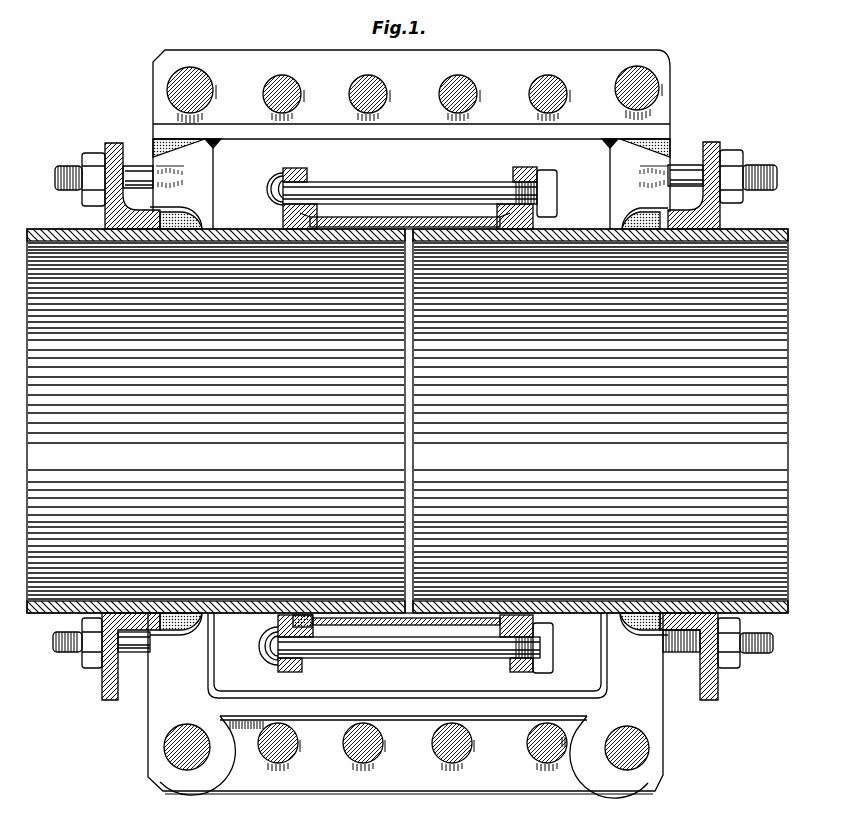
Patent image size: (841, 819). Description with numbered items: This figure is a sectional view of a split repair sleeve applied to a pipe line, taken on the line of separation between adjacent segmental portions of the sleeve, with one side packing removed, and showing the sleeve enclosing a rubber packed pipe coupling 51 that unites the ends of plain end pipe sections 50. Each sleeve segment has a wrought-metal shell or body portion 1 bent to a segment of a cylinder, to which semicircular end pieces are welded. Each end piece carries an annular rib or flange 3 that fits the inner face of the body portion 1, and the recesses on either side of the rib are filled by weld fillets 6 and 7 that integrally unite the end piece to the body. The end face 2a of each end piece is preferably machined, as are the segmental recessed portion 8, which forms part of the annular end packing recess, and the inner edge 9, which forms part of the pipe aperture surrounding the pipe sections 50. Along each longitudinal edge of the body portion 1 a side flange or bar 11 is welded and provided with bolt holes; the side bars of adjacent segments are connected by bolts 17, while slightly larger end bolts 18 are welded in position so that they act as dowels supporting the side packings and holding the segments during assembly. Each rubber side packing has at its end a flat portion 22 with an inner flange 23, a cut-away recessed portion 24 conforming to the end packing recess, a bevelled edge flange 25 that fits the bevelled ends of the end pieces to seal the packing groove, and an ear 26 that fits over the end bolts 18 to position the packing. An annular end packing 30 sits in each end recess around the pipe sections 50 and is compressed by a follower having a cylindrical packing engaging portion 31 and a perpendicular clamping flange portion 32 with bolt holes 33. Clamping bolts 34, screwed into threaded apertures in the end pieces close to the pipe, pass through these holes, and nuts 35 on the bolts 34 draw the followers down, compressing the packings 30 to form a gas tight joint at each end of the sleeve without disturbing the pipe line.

The shell or body portion 1 is at (470, 130).
The end faces of the end pieces 2a is at (200, 190).
The annular rib or flange 3 is at (203, 139).
The fillet 6 is at (216, 147).
The fillet 7 is at (152, 143).
The segmental recessed portion 8 is at (195, 212).
The inner edge of the end piece 9 is at (213, 220).
The side flange or bar 11 is at (563, 63).
The bolts 17 is at (348, 91).
The end bolts 18 is at (190, 68).
The flat portion 22 is at (406, 731).
The flange 23 is at (214, 680).
The cut-away recessed portion 24 is at (170, 640).
The edge flange 25 is at (190, 638).
The ear 26 is at (170, 772).
The end packing 30 is at (643, 632).
The cylindrical packing engaging portion 31 is at (680, 646).
The clamping flange portion 32 is at (710, 141).
The bolt holes 33 is at (726, 153).
The clamping bolts 34 is at (766, 190).
The nuts 35 is at (745, 165).
The pipe sections 50 is at (250, 614).
The pipe coupling 51 is at (383, 216).